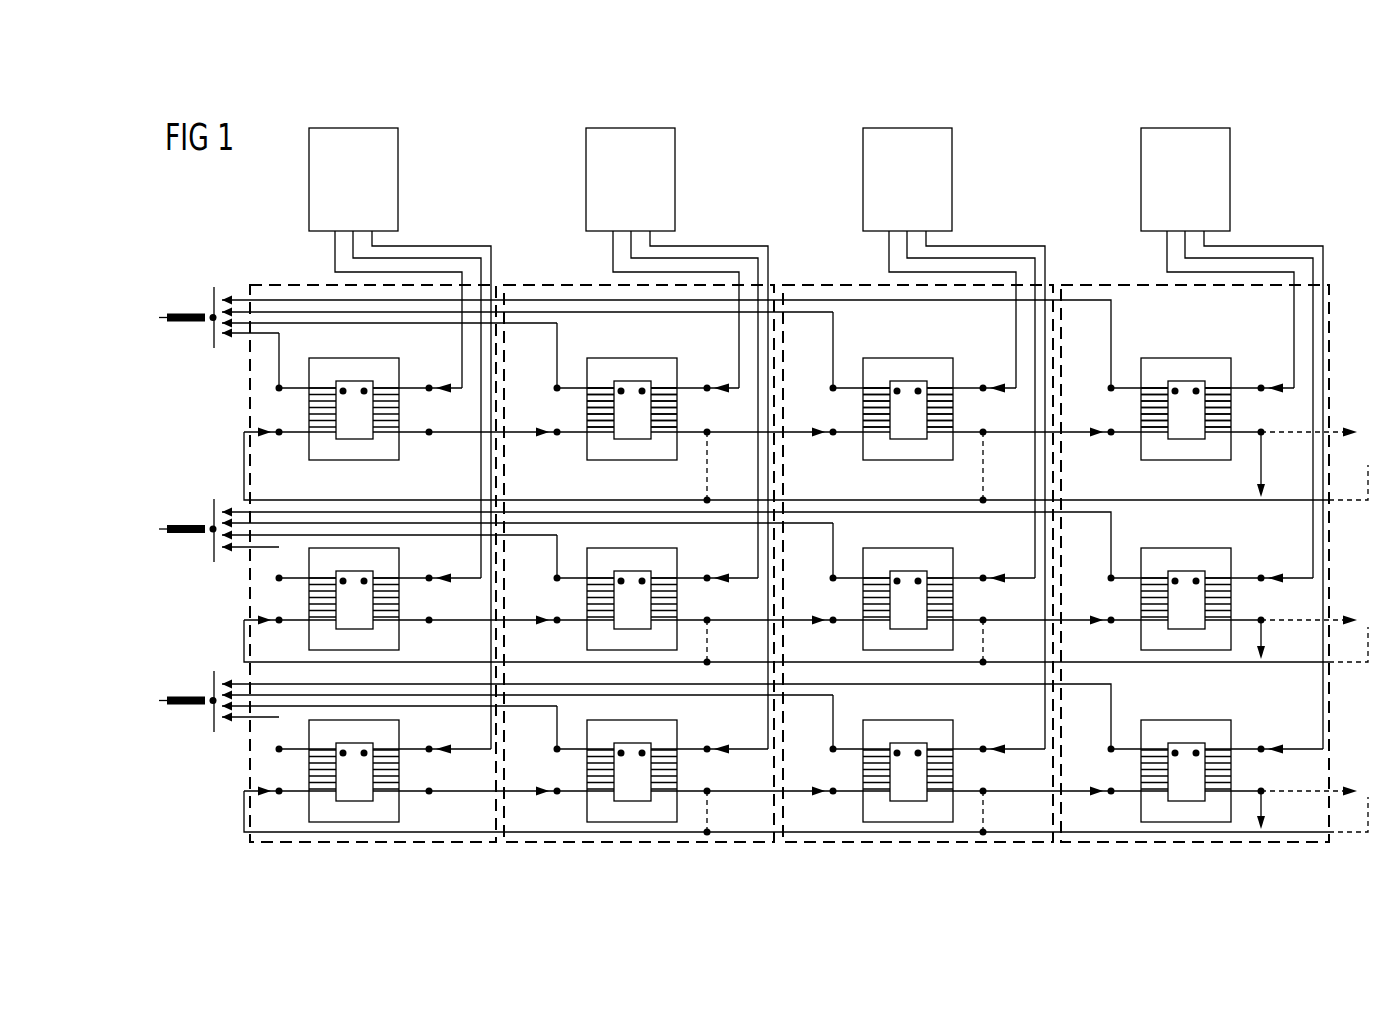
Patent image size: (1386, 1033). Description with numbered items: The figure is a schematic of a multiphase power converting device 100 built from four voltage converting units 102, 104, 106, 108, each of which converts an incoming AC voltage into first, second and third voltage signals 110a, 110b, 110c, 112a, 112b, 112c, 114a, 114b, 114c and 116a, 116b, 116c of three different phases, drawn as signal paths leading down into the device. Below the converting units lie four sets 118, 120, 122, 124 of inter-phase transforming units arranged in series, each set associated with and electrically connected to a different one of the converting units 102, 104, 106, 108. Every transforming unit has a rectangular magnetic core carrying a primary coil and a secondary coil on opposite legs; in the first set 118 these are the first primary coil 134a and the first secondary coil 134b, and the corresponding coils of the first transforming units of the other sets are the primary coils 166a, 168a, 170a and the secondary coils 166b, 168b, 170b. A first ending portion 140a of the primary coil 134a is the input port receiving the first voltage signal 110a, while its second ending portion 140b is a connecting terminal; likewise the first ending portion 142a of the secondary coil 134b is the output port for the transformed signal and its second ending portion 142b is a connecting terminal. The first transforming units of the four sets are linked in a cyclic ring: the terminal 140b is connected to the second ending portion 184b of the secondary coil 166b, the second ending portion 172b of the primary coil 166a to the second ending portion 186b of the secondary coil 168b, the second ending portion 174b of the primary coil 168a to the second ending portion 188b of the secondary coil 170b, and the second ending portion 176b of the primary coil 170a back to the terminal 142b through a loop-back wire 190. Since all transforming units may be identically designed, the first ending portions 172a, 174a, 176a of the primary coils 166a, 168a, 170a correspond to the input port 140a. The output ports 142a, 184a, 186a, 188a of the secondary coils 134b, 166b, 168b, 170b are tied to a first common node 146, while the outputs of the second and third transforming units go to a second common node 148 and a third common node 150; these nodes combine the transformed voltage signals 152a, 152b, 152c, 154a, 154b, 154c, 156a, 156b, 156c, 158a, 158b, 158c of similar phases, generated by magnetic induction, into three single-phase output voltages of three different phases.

The multiphase power converting device 100 is at (1300, 166).
The voltage converting unit 102 is at (309, 204).
The voltage converting unit 104 is at (586, 180).
The voltage converting unit 106 is at (863, 180).
The voltage converting unit 108 is at (1141, 177).
The first voltage signal 110a is at (335, 252).
The second voltage signal 110b is at (423, 258).
The third voltage signal 110c is at (475, 246).
The first voltage signal 112a is at (613, 250).
The second voltage signal 112b is at (698, 258).
The third voltage signal 112c is at (750, 246).
The first voltage signal 114a is at (889, 250).
The second voltage signal 114b is at (976, 258).
The third voltage signal 114c is at (1028, 246).
The first voltage signal 116a is at (1167, 249).
The second voltage signal 116b is at (1253, 258).
The third voltage signal 116c is at (1306, 246).
The first set of inter-phase transforming units 118 is at (358, 850).
The second set of inter-phase transforming units 120 is at (632, 851).
The third set of inter-phase transforming units 122 is at (907, 851).
The fourth set of inter-phase transforming units 124 is at (1180, 851).
The first primary coil 134a is at (399, 413).
The first secondary coil 134b is at (309, 414).
The first ending portion of the primary coil 140a is at (427, 385).
The second ending portion of the primary coil 140b is at (429, 437).
The first ending portion of the secondary coil 142a is at (281, 385).
The second ending portion of the secondary coil 142b is at (279, 437).
The first common node 146 is at (206, 314).
The second common node 148 is at (208, 526).
The third common node 150 is at (208, 697).
The transformed voltage signal 152a is at (216, 350).
The transformed voltage signal 152b is at (216, 562).
The transformed voltage signal 152c is at (216, 732).
The transformed voltage signal 154a is at (537, 323).
The transformed voltage signal 154b is at (537, 535).
The transformed voltage signal 154c is at (537, 706).
The transformed voltage signal 156a is at (797, 312).
The transformed voltage signal 156b is at (836, 534).
The transformed voltage signal 156c is at (836, 704).
The transformed voltage signal 158a is at (232, 296).
The transformed voltage signal 158b is at (230, 508).
The transformed voltage signal 158c is at (230, 680).
The primary coil 166a is at (677, 413).
The secondary coil 166b is at (587, 413).
The primary coil 168a is at (953, 413).
The secondary coil 168b is at (863, 413).
The primary coil 170a is at (1231, 413).
The secondary coil 170b is at (1141, 413).
The output terminal 172a is at (704, 385).
The second ending portion of the primary coil 172b is at (704, 438).
The output terminal 174a is at (980, 385).
The second ending portion of the primary coil 174b is at (981, 438).
The output terminal 176a is at (1258, 385).
The second ending portion of the primary coil 176b is at (1263, 435).
The first ending portion of the secondary coil 184a is at (559, 385).
The second ending portion of the secondary coil 184b is at (557, 437).
The first ending portion of the secondary coil 186a is at (835, 385).
The second ending portion of the secondary coil 186b is at (833, 437).
The first ending portion of the secondary coil 188a is at (1113, 385).
The second ending portion of the secondary coil 188b is at (1111, 437).
The loop-back wire 190 is at (1260, 473).